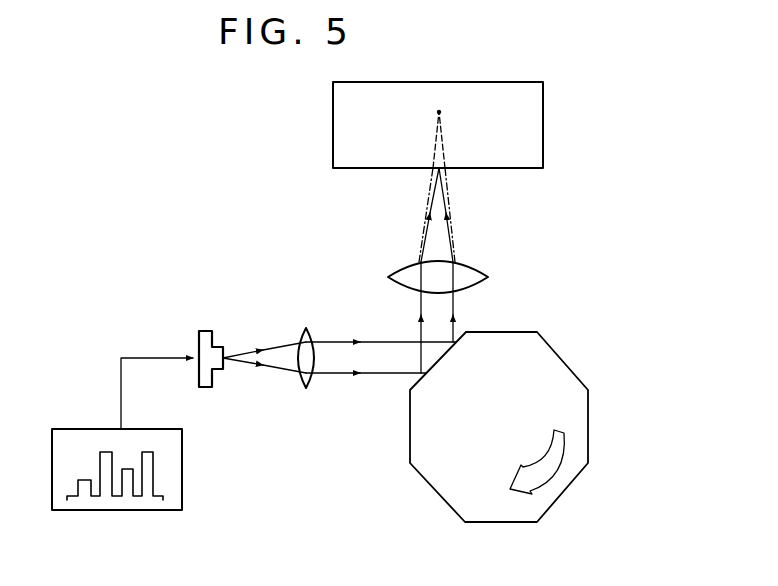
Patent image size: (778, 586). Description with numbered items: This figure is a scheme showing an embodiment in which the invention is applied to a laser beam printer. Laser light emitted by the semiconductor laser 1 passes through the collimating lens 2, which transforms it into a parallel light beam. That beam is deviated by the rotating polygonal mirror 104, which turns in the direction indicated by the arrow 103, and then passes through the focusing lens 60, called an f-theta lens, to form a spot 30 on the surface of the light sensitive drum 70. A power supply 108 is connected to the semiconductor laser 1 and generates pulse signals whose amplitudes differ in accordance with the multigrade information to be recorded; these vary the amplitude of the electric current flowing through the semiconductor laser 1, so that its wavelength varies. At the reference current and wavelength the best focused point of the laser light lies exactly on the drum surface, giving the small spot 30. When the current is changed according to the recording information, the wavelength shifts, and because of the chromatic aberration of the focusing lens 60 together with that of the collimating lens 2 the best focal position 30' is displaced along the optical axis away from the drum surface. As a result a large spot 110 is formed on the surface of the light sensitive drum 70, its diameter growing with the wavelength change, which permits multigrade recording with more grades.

The semiconductor laser 1 is at (205, 331).
The collimating lens 2 is at (306, 328).
The spot 30 is at (467, 162).
The best focal position 30' is at (453, 76).
The focusing lens 60 is at (488, 277).
The light sensitive drum 70 is at (543, 126).
The arrow 103 is at (566, 445).
The rotating polygonal mirror 104 is at (563, 360).
The power supply 108 is at (182, 463).
The large spot 110 is at (430, 170).